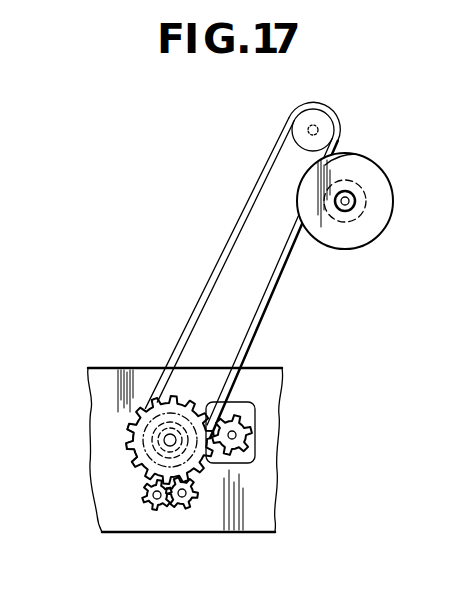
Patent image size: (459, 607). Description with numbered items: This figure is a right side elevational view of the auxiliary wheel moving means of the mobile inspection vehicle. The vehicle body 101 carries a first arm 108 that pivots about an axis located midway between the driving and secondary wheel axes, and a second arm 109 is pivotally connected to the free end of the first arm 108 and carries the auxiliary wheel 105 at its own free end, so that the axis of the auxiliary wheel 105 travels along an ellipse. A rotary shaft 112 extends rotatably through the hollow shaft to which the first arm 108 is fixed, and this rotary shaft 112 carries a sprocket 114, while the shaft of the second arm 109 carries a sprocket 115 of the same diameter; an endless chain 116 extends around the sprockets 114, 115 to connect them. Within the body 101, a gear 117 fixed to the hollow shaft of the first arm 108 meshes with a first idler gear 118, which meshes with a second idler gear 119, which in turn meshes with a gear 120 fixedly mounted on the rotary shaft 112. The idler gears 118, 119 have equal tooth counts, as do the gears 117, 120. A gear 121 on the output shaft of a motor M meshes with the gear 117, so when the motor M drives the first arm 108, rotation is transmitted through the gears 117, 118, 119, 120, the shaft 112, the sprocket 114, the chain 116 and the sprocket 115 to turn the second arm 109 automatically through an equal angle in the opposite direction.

The body 101 is at (265, 473).
The auxiliary wheel 105 is at (375, 232).
The first arm 108 is at (226, 258).
The second arm 109 is at (342, 148).
The rotary shaft 112 is at (168, 441).
The sprocket 114 is at (162, 405).
The sprocket 115 is at (282, 130).
The endless chain 116 is at (268, 298).
The gear 117 is at (128, 430).
The gear 120 is at (130, 438).
The gear 121 is at (248, 427).
The first idler gear 118 is at (152, 513).
The second idler gear 119 is at (180, 512).
The motor M is at (257, 410).